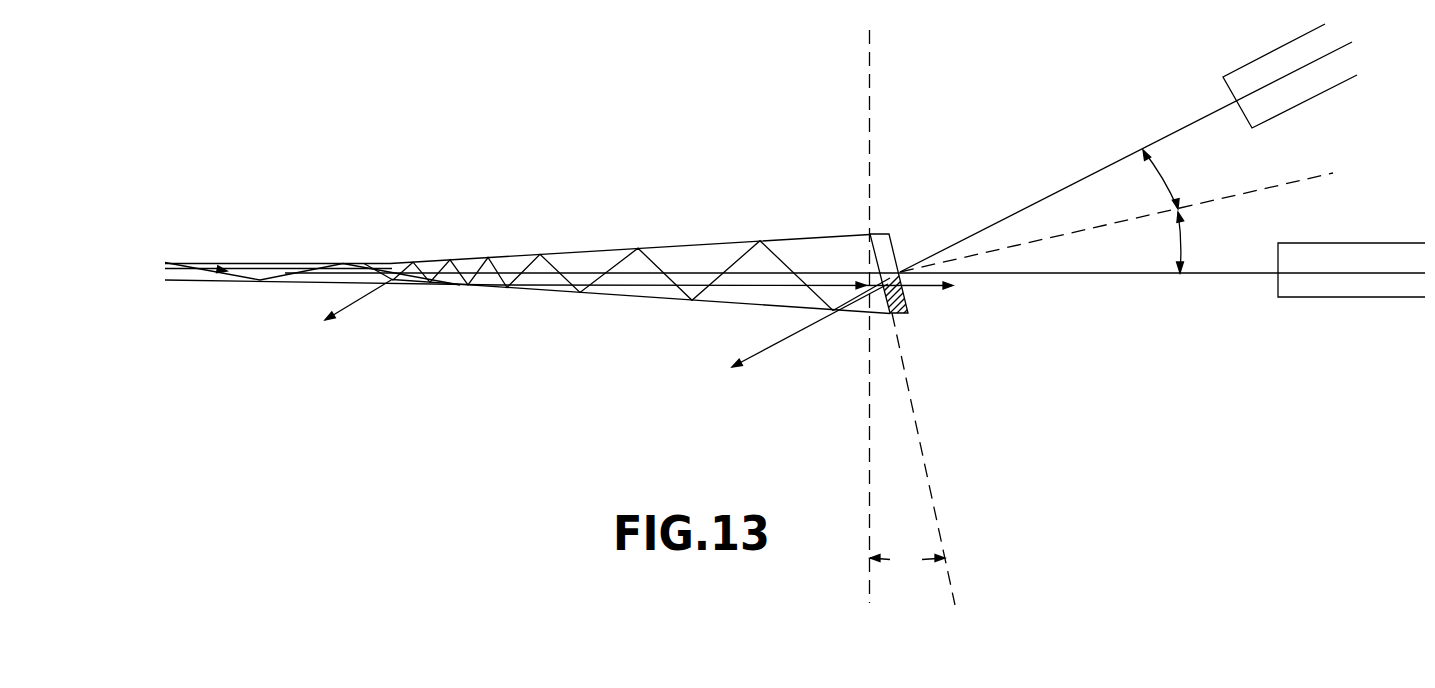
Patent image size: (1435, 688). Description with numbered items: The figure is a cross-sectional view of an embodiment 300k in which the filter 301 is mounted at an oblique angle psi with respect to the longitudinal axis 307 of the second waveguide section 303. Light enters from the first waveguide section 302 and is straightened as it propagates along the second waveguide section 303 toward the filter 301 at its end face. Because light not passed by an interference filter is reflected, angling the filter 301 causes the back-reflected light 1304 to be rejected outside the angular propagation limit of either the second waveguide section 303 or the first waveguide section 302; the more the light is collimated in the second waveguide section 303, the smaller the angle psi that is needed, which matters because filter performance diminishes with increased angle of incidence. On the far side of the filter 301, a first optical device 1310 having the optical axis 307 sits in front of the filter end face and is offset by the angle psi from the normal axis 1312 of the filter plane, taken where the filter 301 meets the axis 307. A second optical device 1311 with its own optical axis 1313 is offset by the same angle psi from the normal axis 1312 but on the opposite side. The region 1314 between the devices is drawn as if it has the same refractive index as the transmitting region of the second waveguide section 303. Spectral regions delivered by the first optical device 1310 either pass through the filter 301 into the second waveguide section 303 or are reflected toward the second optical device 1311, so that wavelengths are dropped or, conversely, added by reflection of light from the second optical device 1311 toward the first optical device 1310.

The embodiment 300k is at (707, 300).
The filter 301 is at (905, 313).
The first waveguide section 302 is at (266, 281).
The second waveguide section 303 is at (643, 281).
The longitudinal axis 307 is at (1093, 273).
The back-reflected light 1304 is at (373, 288).
The first optical device 1310 is at (1373, 297).
The second optical device 1311 is at (1280, 48).
The normal axis 1312 is at (1333, 173).
The optical axis 1313 is at (1200, 120).
The region 1314 is at (1178, 295).